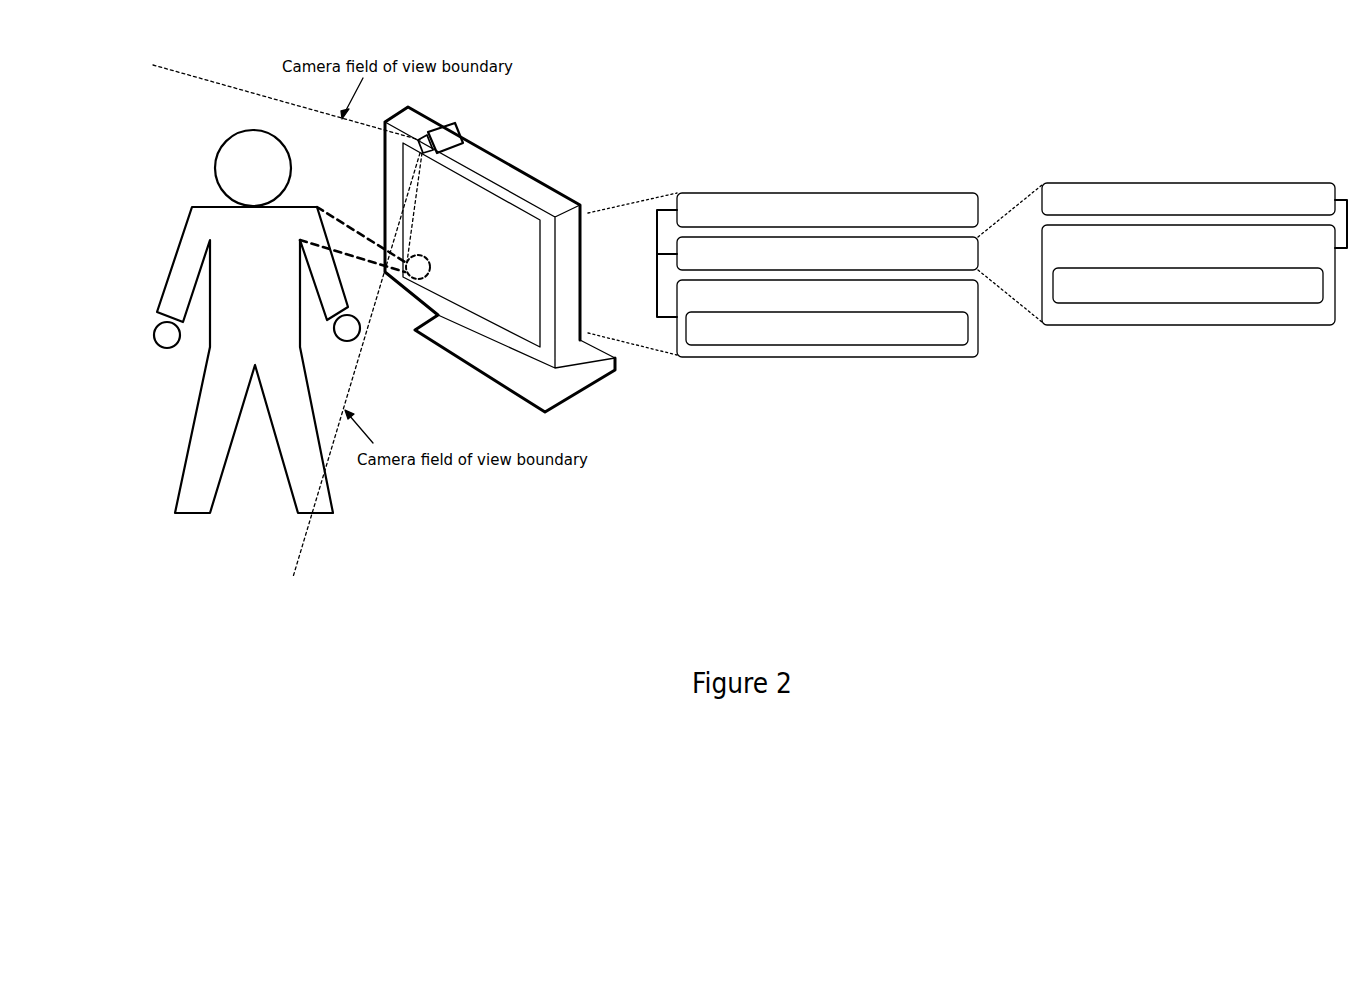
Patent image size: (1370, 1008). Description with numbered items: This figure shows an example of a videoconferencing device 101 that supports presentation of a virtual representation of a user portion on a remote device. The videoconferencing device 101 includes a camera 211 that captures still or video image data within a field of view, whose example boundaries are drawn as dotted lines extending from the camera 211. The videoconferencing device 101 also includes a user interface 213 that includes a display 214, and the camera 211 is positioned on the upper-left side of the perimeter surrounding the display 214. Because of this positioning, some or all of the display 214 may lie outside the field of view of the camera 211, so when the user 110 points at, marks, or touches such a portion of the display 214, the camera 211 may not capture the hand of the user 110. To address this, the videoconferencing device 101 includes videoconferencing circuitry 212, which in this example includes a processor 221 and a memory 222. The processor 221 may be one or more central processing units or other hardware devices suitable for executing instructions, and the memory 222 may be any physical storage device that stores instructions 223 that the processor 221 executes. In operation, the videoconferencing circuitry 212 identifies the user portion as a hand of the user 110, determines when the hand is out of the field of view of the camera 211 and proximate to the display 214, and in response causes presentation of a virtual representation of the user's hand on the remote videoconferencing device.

The videoconferencing device 101 is at (681, 256).
The user 110 is at (200, 515).
The camera 211 is at (453, 125).
The videoconferencing circuitry 212 is at (967, 263).
The user interface 213 is at (967, 306).
The display 214 is at (517, 246).
The processor 221 is at (1322, 208).
The memory 222 is at (1322, 250).
The instructions 223 is at (1312, 295).